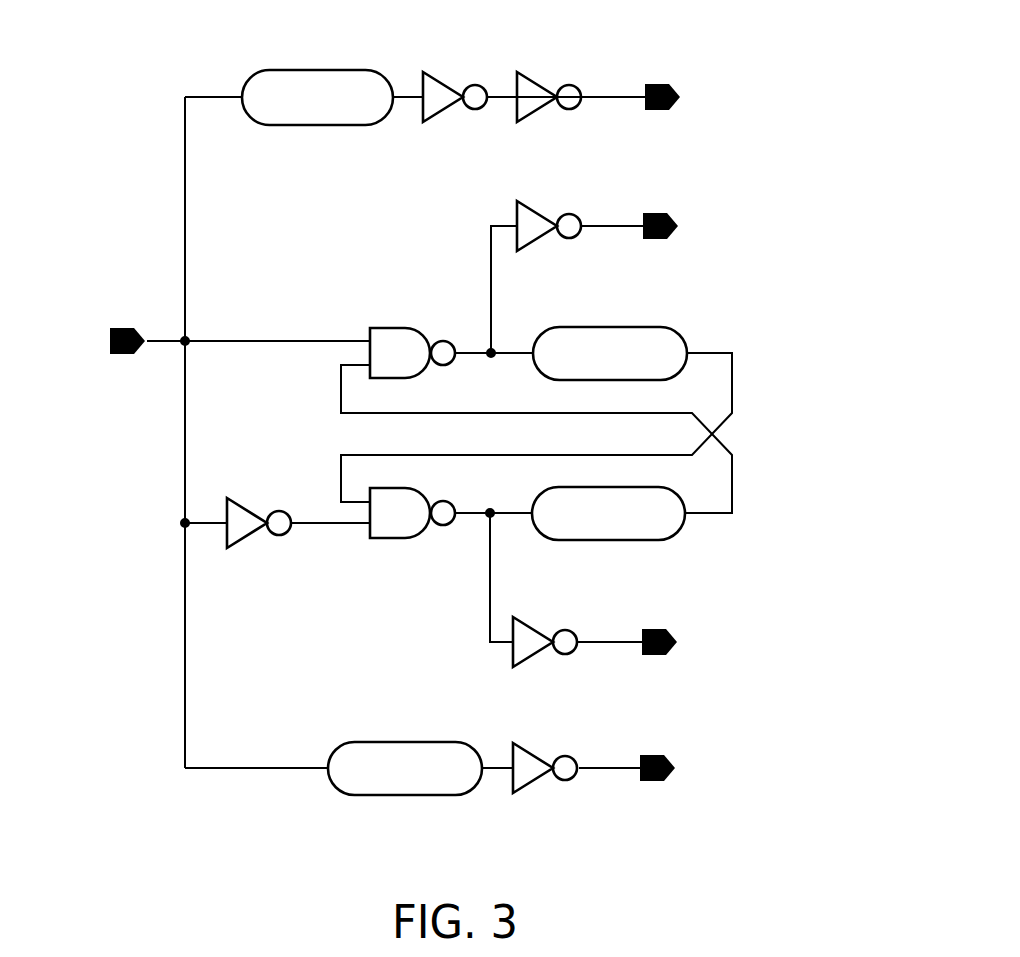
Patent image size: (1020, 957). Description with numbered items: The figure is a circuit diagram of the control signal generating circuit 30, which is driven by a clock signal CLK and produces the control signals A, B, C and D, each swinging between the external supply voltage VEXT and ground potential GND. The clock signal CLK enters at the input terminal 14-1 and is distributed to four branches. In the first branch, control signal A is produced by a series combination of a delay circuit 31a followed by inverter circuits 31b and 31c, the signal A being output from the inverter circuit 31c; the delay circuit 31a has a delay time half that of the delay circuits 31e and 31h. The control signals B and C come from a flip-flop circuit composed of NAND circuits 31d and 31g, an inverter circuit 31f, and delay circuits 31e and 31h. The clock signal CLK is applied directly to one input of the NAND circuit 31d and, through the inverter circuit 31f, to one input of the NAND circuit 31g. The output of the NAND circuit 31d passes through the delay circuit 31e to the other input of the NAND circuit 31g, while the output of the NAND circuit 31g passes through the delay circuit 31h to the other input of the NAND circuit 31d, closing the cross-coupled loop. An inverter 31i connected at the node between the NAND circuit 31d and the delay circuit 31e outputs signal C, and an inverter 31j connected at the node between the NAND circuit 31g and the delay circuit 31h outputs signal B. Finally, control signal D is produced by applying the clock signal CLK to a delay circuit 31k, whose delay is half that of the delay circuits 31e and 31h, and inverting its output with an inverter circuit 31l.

The control signal generating circuit 30 is at (172, 78).
The clock input terminal CLK 14-1 is at (126, 327).
The delay circuit 31a is at (330, 70).
The inverter circuit 31b is at (442, 77).
The inverter circuit 31c is at (540, 77).
The NAND circuit 31d is at (398, 328).
The delay circuit 31e is at (620, 327).
The inverter circuit 31f is at (240, 550).
The NAND circuit 31g is at (392, 538).
The delay circuit 31h is at (620, 541).
The inverter 31i is at (540, 212).
The inverter 31j is at (535, 660).
The delay circuit 31k is at (415, 795).
The inverter circuit 31l is at (537, 793).